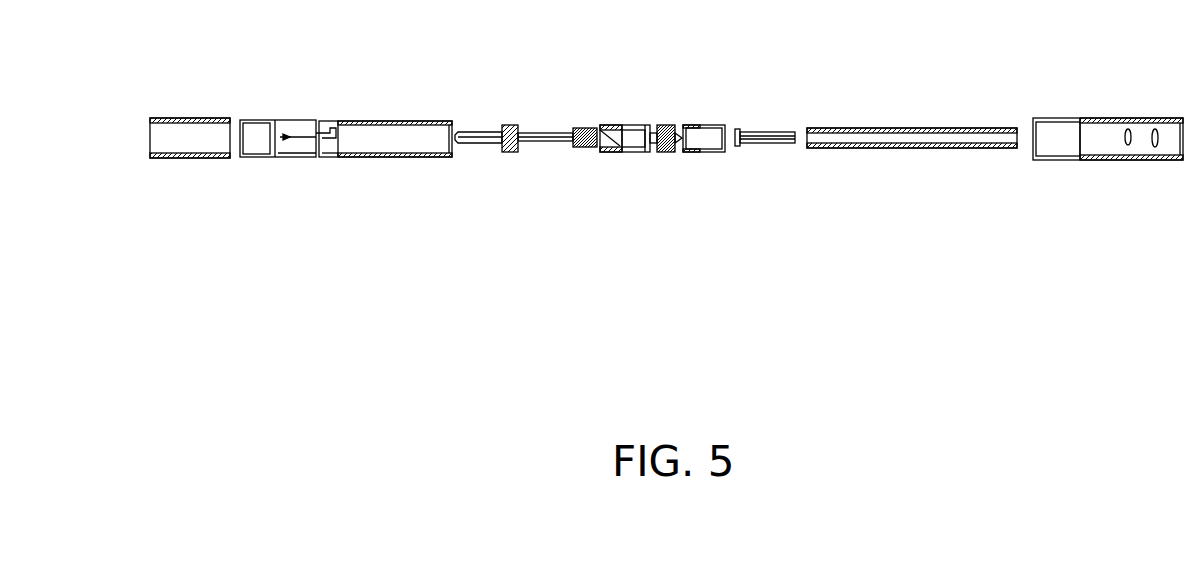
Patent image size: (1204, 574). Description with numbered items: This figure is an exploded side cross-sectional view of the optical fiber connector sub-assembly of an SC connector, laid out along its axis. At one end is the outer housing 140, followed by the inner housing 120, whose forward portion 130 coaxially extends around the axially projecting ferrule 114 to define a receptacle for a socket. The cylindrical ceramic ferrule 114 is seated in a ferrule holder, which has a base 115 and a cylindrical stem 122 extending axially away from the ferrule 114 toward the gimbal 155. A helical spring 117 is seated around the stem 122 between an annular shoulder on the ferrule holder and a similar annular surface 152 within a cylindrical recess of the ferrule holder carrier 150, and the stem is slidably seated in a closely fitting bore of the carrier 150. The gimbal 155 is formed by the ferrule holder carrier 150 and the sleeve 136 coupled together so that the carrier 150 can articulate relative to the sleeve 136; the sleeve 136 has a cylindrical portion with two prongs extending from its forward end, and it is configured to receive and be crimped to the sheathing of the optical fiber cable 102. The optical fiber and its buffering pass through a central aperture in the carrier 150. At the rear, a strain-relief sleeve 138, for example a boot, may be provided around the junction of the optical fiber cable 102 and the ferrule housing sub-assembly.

The optical fiber cable 102 is at (910, 149).
The cylindrical ceramic ferrule 114 is at (480, 152).
The base of the ferrule holder 115 is at (505, 125).
The helical spring 117 is at (585, 147).
The inner housing 120 is at (378, 121).
The cylindrical stem 122 is at (542, 132).
The forward portion 130 is at (292, 157).
The sleeve 136 is at (710, 152).
The strain-relief sleeve 138 is at (1083, 160).
The outer housing 140 is at (215, 118).
The ferrule holder carrier 150 is at (623, 152).
The annular surface 152 is at (600, 125).
The gimbal 155 is at (660, 95).